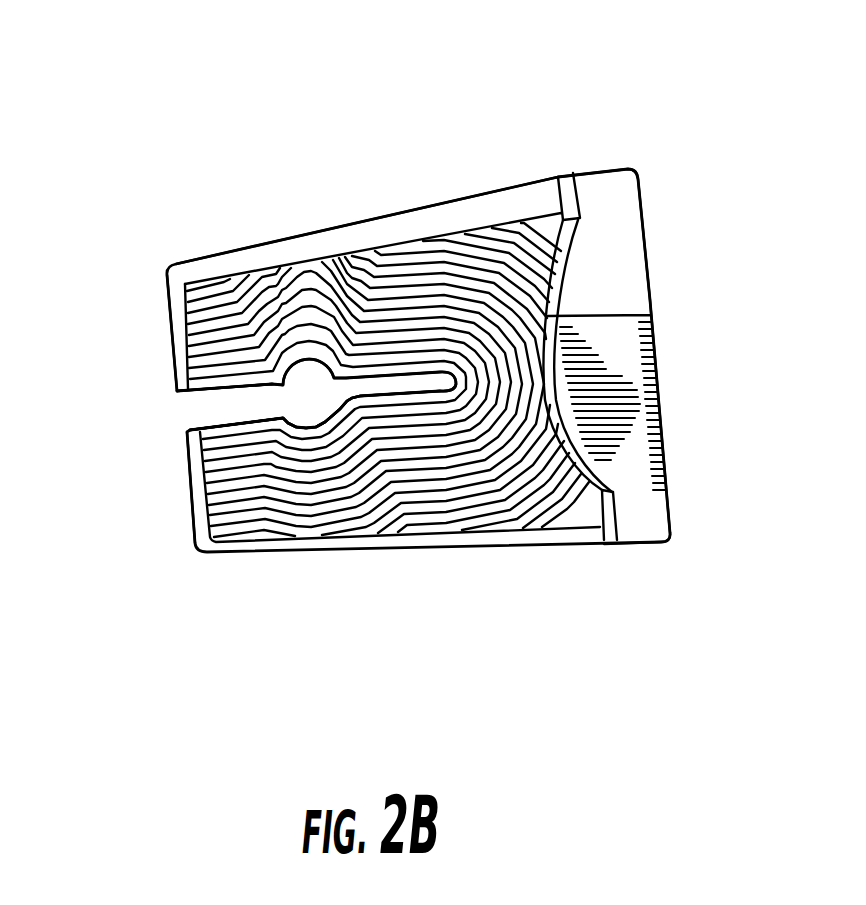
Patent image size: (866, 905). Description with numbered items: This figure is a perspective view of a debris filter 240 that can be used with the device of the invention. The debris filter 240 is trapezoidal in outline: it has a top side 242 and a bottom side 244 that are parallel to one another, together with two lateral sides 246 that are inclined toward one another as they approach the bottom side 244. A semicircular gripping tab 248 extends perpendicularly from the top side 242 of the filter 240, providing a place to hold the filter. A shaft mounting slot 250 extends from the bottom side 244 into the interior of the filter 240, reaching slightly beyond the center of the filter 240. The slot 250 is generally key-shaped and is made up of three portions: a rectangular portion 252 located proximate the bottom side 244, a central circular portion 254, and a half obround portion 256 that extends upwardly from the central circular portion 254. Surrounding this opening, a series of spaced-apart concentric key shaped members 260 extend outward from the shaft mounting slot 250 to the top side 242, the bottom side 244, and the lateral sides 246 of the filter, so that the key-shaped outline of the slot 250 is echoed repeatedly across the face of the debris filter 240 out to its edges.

The debris filter 240 is at (432, 578).
The top side 242 is at (640, 202).
The bottom side 244 is at (194, 503).
The lateral sides 246 is at (488, 196).
The semicircular gripping tab 248 is at (650, 315).
The shaft mounting slot 250 is at (228, 388).
The rectangular portion 252 is at (185, 400).
The central circular portion 254 is at (316, 418).
The half obround portion 256 is at (427, 385).
The concentric key shaped members 260 is at (478, 457).